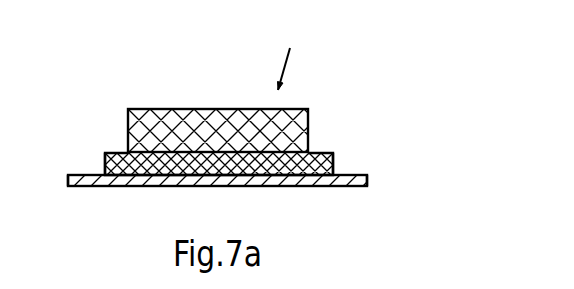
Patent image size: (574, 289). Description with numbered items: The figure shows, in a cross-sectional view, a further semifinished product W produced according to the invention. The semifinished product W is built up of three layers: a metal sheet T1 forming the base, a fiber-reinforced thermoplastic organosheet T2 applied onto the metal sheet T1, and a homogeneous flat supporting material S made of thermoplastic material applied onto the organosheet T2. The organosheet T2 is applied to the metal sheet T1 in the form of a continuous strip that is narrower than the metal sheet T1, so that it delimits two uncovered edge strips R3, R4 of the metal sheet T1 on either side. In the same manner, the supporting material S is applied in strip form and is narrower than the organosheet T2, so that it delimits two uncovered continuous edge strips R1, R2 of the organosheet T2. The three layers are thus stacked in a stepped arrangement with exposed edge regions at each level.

The supporting material S is at (210, 120).
The thermoplastic organosheet T2 is at (133, 162).
The metal sheet T1 is at (333, 180).
The uncovered continuous edge strip of the organosheet R1 is at (118, 153).
The uncovered continuous edge strip of the organosheet R2 is at (318, 153).
The uncovered edge strip of the metal sheet R3 is at (80, 172).
The uncovered edge strip of the metal sheet R4 is at (353, 175).
The semifinished product W is at (292, 46).